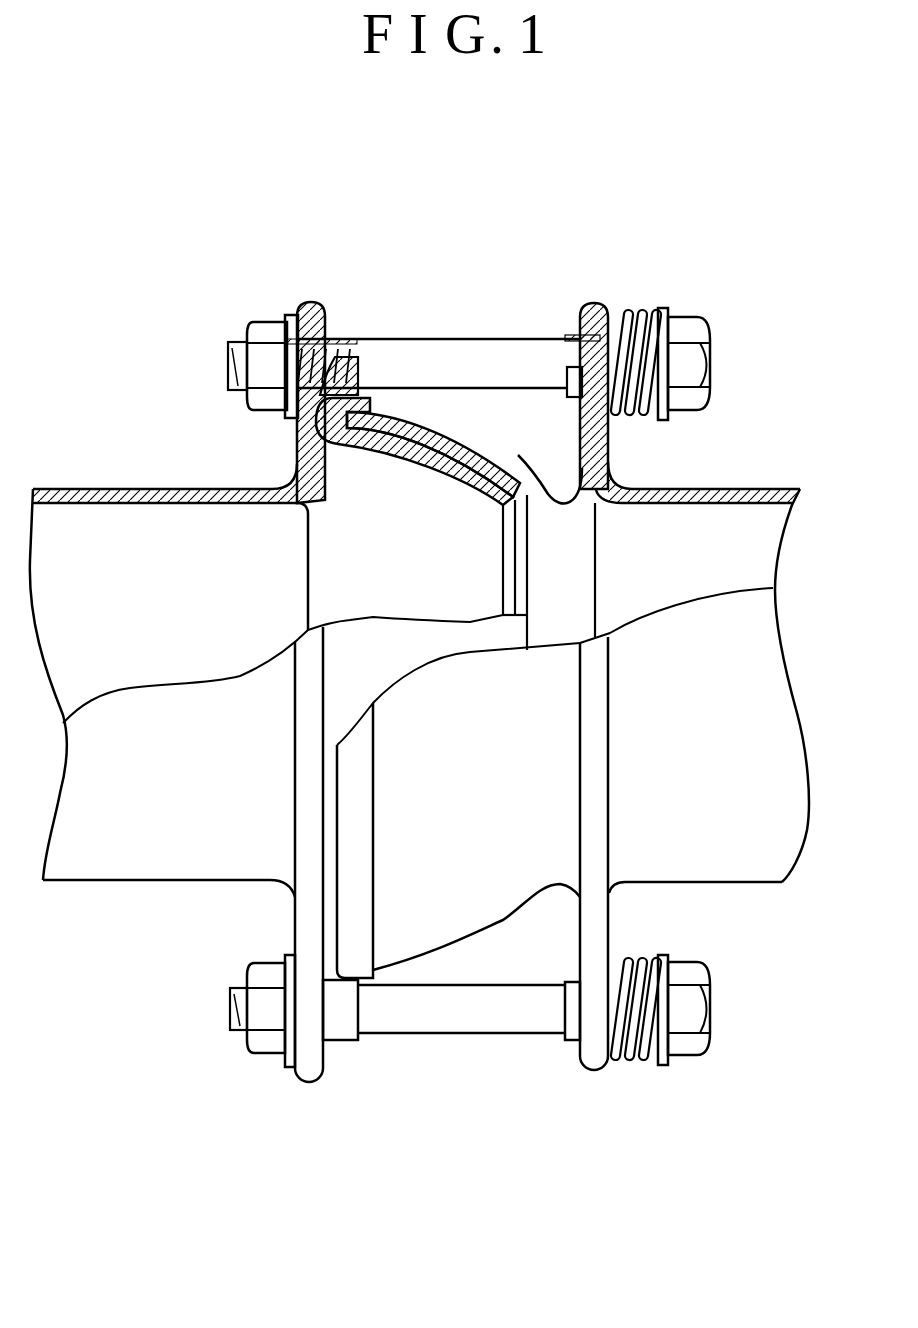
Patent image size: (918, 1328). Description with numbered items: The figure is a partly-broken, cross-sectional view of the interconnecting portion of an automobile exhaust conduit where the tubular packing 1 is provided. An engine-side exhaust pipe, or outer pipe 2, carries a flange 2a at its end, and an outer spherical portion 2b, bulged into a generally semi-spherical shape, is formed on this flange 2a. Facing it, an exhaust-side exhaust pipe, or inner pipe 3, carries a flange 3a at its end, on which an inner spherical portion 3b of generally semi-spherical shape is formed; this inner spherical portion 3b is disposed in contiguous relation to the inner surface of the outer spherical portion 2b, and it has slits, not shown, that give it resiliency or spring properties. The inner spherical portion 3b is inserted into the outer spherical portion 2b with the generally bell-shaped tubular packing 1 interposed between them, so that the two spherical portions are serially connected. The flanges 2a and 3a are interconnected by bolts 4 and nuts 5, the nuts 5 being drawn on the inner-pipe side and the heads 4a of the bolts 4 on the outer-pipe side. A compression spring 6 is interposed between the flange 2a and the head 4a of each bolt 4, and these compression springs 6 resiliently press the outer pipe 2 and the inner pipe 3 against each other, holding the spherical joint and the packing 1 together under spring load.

The tubular packing 1 is at (412, 432).
The engine-side exhaust pipe (outer pipe) 2 is at (759, 873).
The flange 2a is at (597, 1065).
The outer spherical portion 2b is at (417, 948).
The exhaust-side exhaust pipe (inner pipe) 3 is at (100, 866).
The flange 3a is at (310, 1080).
The inner spherical portion 3b is at (470, 470).
The bolt 4 is at (543, 352).
The head of bolt 4a is at (690, 323).
The nut 5 is at (265, 330).
The compression spring 6 is at (638, 330).